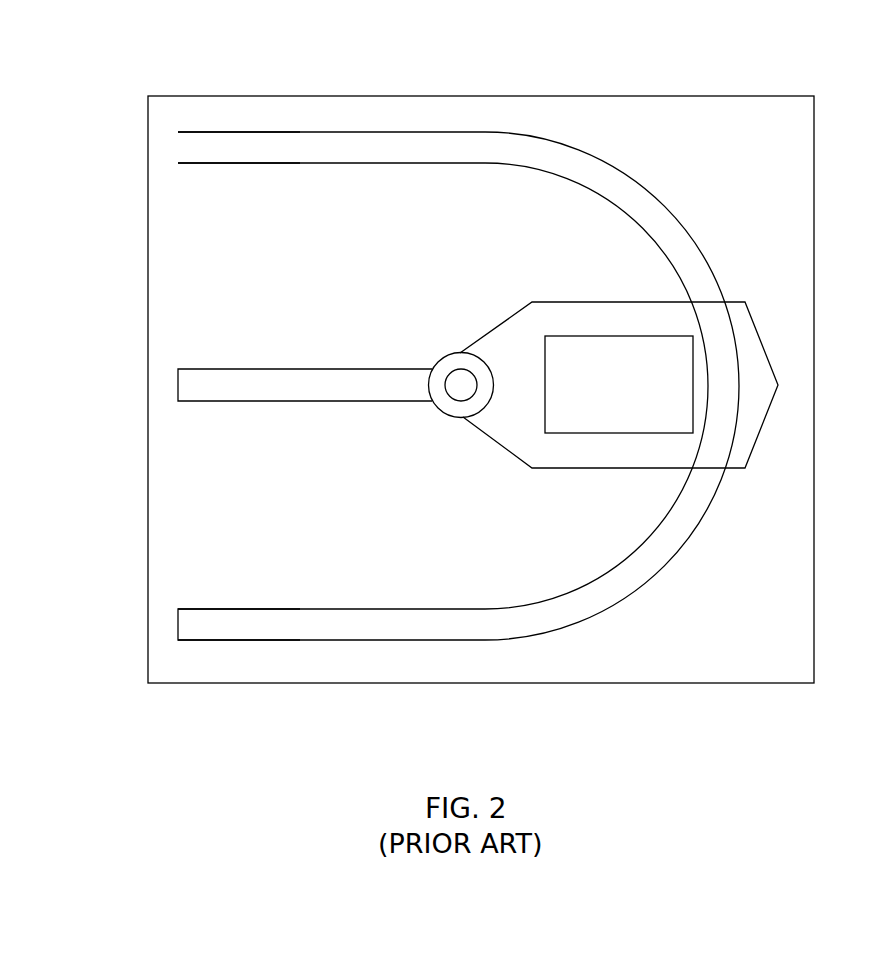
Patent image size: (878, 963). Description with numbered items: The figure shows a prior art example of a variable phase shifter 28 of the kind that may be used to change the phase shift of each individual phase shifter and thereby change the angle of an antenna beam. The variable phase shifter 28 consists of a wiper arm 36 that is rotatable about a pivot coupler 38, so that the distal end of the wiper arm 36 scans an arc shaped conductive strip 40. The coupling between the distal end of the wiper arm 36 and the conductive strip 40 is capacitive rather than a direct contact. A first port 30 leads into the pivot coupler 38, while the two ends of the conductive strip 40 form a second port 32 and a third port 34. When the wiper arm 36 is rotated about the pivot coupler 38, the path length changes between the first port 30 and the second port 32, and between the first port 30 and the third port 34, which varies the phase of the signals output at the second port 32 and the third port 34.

The variable phase shifter 28 is at (800, 83).
The first port 30 is at (185, 385).
The second port 32 is at (185, 152).
The third port 34 is at (186, 626).
The wiper arm 36 is at (590, 289).
The pivot coupler 38 is at (437, 353).
The conductive strip 40 is at (640, 182).